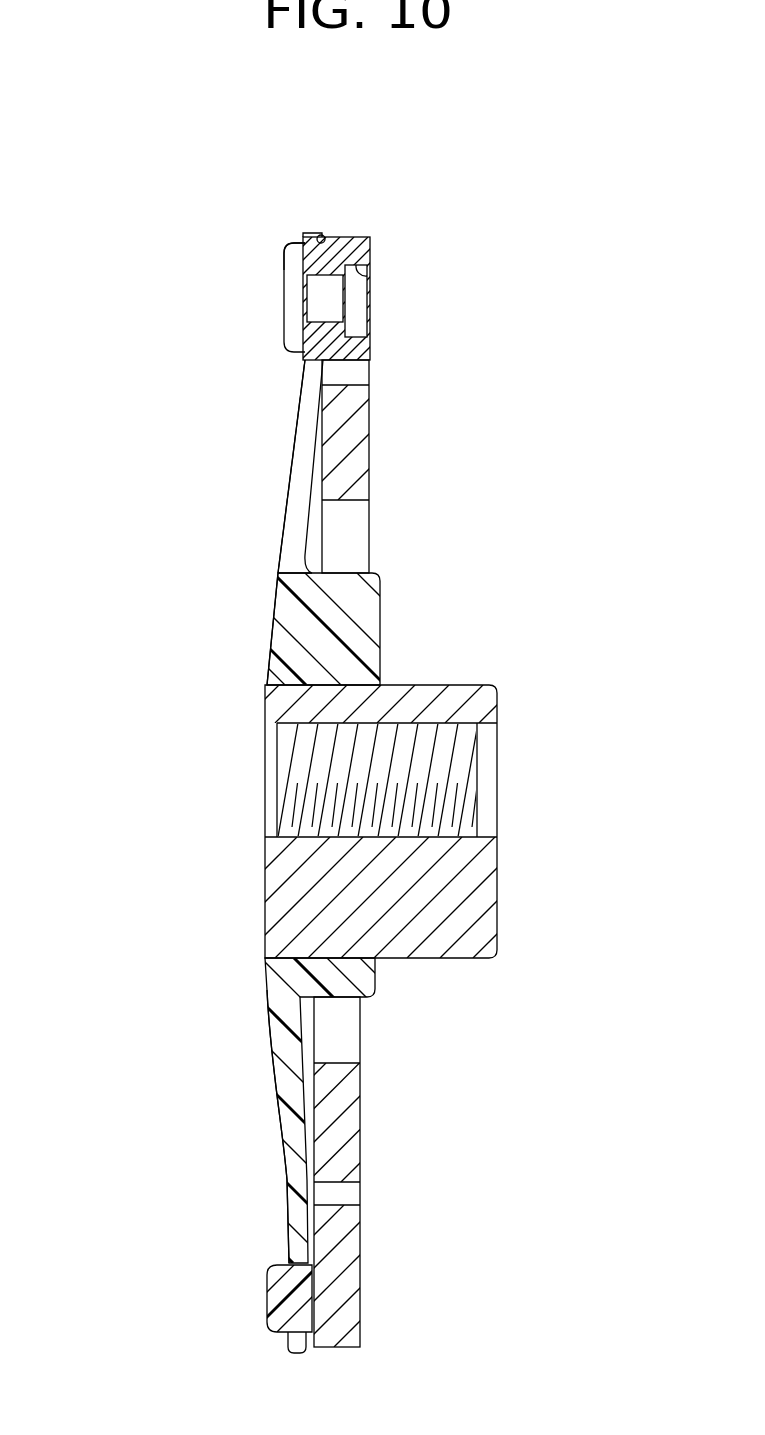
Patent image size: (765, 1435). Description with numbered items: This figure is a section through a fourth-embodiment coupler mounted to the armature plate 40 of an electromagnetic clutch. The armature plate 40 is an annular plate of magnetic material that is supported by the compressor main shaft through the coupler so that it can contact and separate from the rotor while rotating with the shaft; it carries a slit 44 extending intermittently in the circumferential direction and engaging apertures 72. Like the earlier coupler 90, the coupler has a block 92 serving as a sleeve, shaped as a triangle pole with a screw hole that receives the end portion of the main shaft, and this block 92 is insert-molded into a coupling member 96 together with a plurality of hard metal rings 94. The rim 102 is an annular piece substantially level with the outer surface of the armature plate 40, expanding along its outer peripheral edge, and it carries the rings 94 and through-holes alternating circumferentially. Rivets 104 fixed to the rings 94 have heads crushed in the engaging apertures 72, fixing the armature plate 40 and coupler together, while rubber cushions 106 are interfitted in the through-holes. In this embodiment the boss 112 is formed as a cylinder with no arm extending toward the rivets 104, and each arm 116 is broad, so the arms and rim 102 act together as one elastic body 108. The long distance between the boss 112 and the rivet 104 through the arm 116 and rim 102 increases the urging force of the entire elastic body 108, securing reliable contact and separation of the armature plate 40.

The coupler 90 is at (162, 582).
The armature plate 40 is at (348, 243).
The slit 44 is at (338, 1196).
The engaging aperture 72 is at (373, 280).
The block 92 is at (470, 900).
The hard metal rings 94 is at (290, 253).
The coupling member 96 is at (265, 630).
The rim 102 is at (320, 231).
The rivets 104 is at (295, 308).
The rubber cushions 106 is at (283, 1296).
The elastic body 108 is at (283, 467).
The boss 112 is at (360, 615).
The arm 116 is at (278, 540).